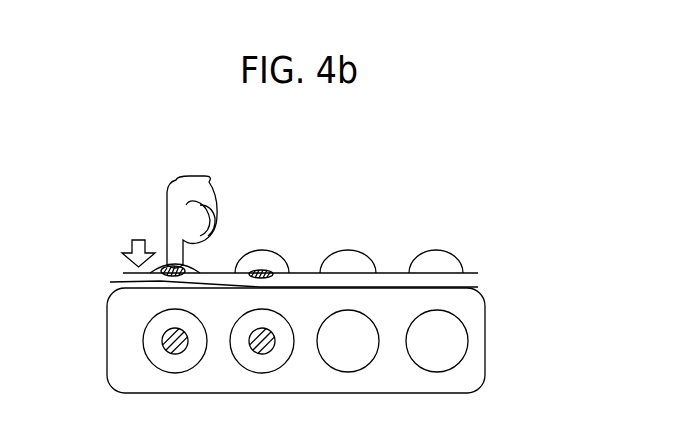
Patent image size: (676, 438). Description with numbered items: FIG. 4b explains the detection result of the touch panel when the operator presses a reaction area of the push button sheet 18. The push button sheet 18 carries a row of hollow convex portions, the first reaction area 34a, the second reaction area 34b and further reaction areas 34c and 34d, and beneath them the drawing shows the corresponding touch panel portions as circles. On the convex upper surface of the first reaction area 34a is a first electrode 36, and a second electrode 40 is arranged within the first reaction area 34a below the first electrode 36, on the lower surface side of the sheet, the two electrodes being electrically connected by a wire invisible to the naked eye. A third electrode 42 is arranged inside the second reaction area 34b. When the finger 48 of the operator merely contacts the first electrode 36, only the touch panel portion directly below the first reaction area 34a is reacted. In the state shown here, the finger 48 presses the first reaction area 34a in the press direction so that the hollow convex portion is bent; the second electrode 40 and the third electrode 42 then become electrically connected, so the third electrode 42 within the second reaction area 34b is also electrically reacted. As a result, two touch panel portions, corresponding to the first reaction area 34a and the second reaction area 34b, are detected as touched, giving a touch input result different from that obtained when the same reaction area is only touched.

The push button sheet 18 is at (487, 262).
The second electrode 40 is at (110, 282).
The first electrode 36 is at (163, 267).
The finger 48 is at (222, 183).
The first reaction area 34a is at (207, 260).
The second reaction area 34b is at (277, 242).
The reaction area 34c is at (367, 243).
The reaction area 34d is at (455, 247).
The third electrode 42 is at (263, 272).